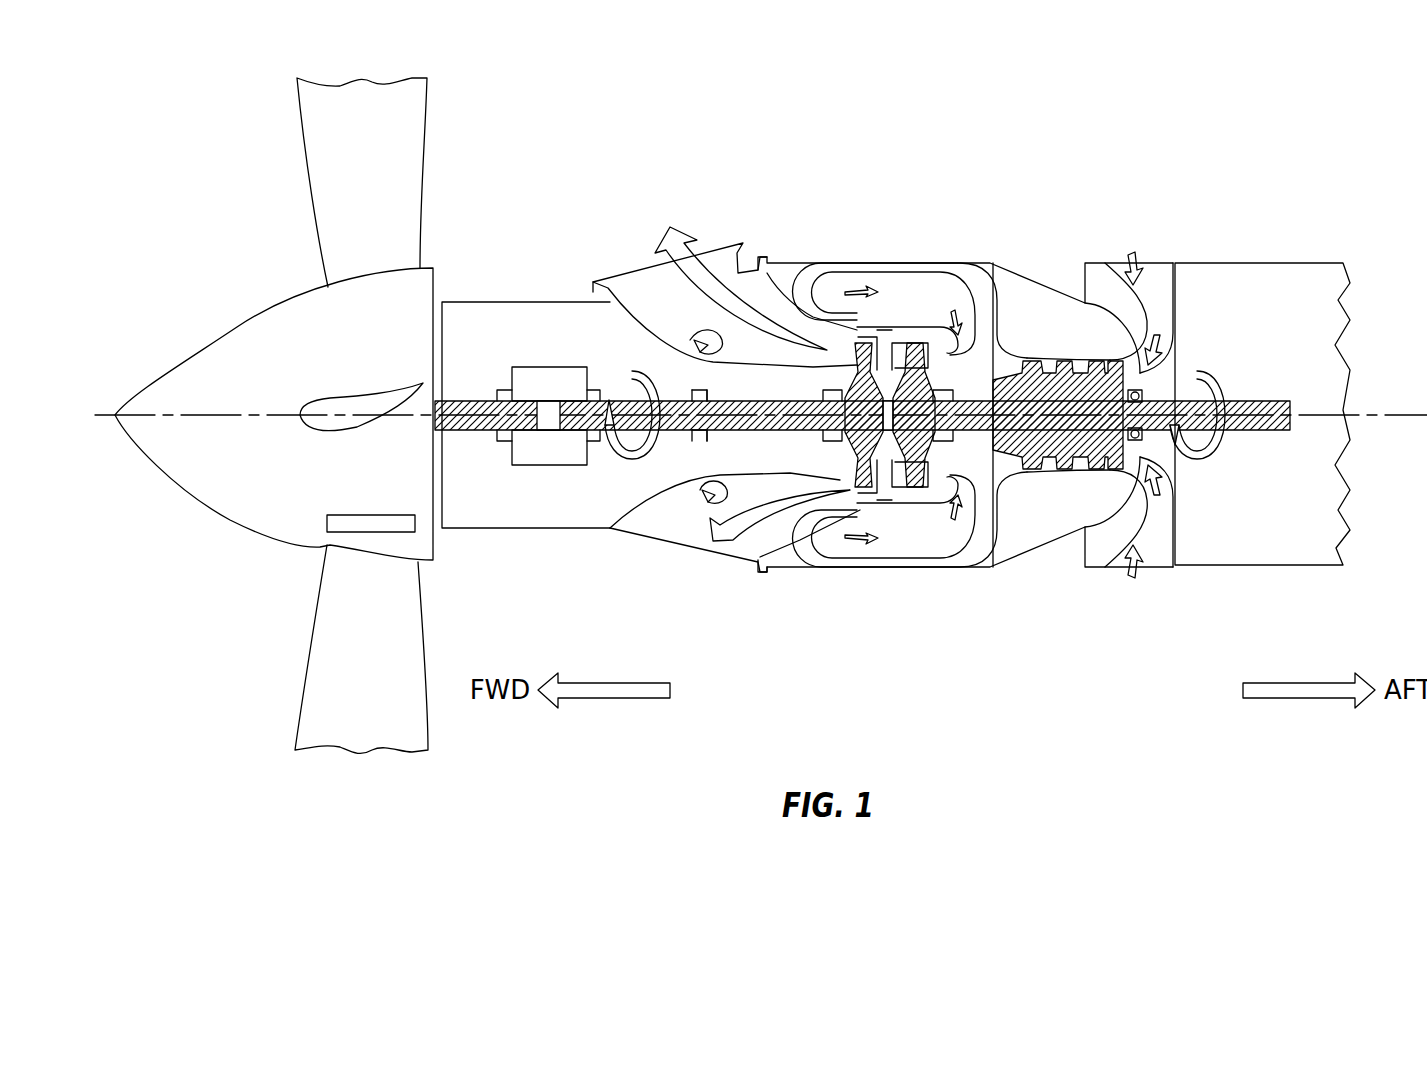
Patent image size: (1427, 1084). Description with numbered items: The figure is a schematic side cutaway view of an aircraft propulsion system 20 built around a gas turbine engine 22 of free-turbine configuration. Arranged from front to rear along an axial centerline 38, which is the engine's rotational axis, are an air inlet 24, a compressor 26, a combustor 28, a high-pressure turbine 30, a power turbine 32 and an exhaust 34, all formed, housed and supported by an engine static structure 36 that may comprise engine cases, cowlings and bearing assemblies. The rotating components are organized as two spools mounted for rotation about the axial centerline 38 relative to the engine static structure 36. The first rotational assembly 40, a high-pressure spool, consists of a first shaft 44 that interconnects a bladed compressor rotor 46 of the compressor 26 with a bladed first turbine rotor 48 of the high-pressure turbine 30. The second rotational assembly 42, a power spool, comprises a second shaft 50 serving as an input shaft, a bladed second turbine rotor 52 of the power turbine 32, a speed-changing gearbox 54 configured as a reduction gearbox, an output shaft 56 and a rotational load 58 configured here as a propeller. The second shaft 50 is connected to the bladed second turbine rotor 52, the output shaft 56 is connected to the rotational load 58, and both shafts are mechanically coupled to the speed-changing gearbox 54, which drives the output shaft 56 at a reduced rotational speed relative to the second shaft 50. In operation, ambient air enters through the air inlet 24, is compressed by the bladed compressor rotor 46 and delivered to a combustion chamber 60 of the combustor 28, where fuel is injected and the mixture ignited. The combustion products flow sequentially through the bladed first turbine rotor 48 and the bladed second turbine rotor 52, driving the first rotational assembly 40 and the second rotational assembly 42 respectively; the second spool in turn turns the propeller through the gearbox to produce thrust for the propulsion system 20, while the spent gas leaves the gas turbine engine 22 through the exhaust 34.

The propulsion system 20 is at (1282, 126).
The gas turbine engine 22 is at (1188, 223).
The air inlet 24 is at (1110, 262).
The compressor 26 is at (1057, 477).
The combustor 28 is at (918, 533).
The high-pressure turbine 30 is at (887, 489).
The power turbine 32 is at (843, 480).
The exhaust 34 is at (632, 281).
The engine static structure 36 is at (903, 262).
The axial centerline 38 is at (1420, 420).
The first rotational assembly 40 is at (1245, 388).
The second rotational assembly 42 is at (668, 458).
The first shaft 44 is at (977, 397).
The bladed compressor rotor 46 is at (1093, 445).
The bladed first turbine rotor 48 is at (905, 344).
The second shaft 50 is at (728, 431).
The bladed second turbine rotor 52 is at (858, 344).
The speed-changing gearbox 54 is at (548, 457).
The output shaft 56 is at (466, 400).
The rotational load 58 is at (322, 545).
The combustion chamber 60 is at (933, 537).